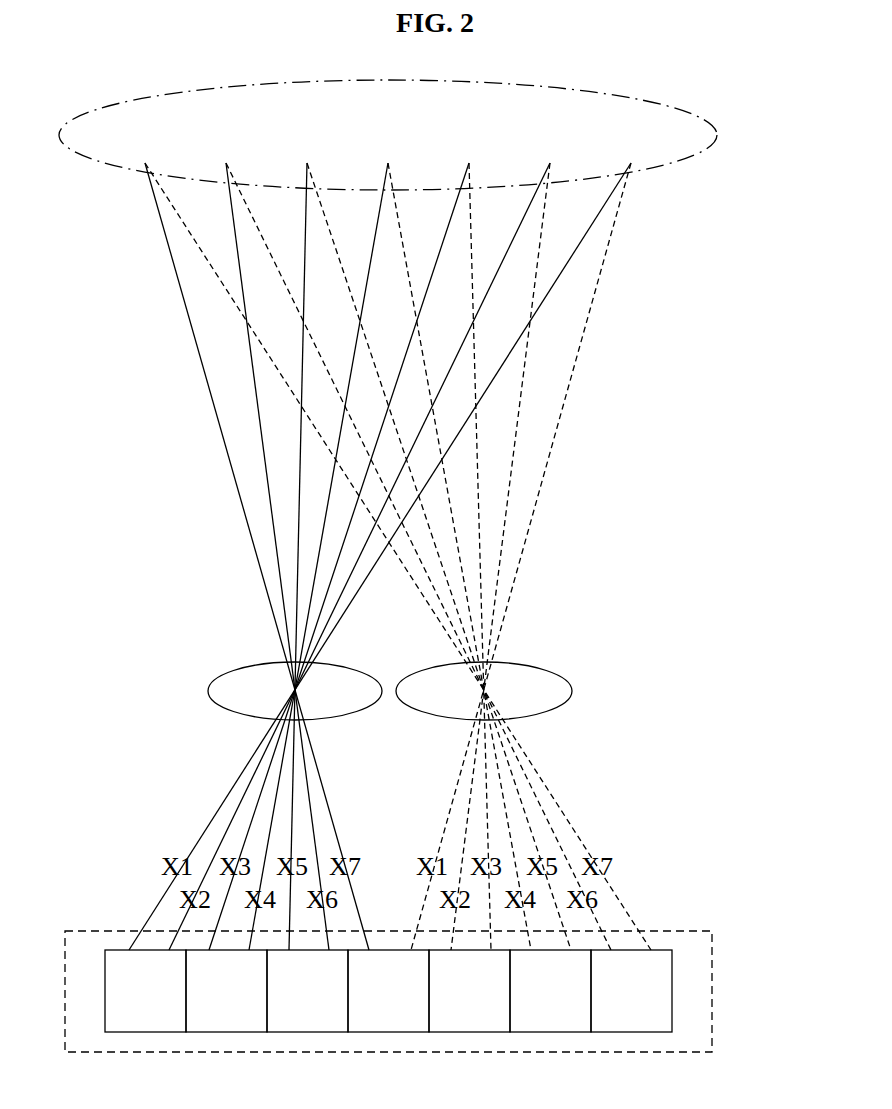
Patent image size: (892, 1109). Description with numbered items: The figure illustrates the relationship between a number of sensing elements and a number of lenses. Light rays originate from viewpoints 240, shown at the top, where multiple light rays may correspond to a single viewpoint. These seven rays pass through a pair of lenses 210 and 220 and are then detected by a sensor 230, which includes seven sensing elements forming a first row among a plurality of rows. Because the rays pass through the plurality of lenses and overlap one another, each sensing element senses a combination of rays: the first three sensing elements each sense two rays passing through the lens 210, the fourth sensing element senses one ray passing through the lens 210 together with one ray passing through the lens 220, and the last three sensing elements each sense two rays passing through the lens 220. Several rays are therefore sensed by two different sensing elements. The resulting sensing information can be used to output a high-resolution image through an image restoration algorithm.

The lens 210 is at (208, 690).
The lens 220 is at (572, 690).
The sensor 230 is at (713, 992).
The viewpoints 240 is at (717, 139).